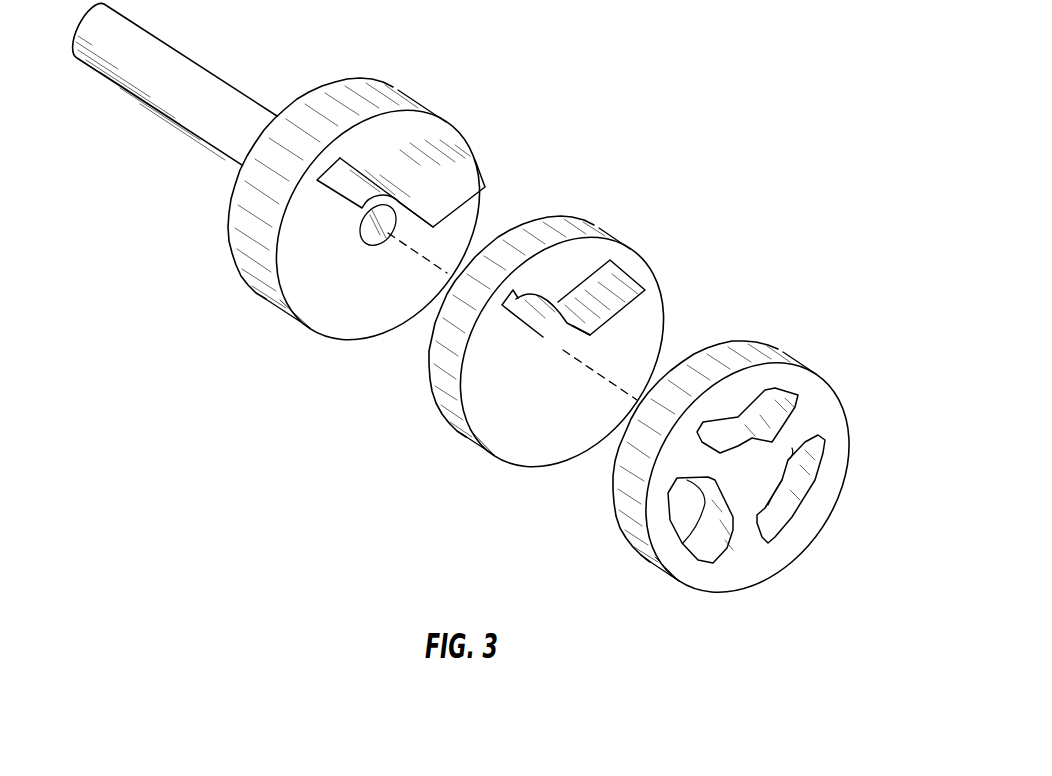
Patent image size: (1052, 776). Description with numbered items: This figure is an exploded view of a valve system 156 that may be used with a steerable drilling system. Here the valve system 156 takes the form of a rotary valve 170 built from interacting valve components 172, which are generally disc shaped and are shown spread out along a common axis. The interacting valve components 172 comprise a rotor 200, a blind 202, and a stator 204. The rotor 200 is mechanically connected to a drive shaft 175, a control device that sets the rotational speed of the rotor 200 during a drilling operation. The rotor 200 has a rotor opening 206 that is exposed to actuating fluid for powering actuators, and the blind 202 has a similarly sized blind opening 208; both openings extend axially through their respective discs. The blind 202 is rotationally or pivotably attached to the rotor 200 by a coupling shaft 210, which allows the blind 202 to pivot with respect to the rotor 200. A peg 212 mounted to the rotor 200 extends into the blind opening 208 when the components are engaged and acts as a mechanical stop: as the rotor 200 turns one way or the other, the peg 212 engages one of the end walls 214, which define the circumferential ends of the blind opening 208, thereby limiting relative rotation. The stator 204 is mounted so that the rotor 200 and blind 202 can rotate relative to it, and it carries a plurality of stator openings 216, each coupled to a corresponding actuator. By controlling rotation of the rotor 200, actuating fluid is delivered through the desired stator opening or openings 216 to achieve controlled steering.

The valve system 156 is at (764, 42).
The rotary valve 170 is at (783, 622).
The interacting valve components 172 is at (347, 342).
The drive shaft 175 is at (153, 115).
The rotor 200 is at (263, 283).
The blind 202 is at (650, 292).
The stator 204 is at (823, 396).
The rotor opening 206 is at (355, 155).
The blind opening 208 is at (570, 258).
The coupling shaft 210 is at (512, 310).
The peg 212 is at (432, 157).
The end walls 214 is at (618, 287).
The stator openings 216 is at (735, 403).